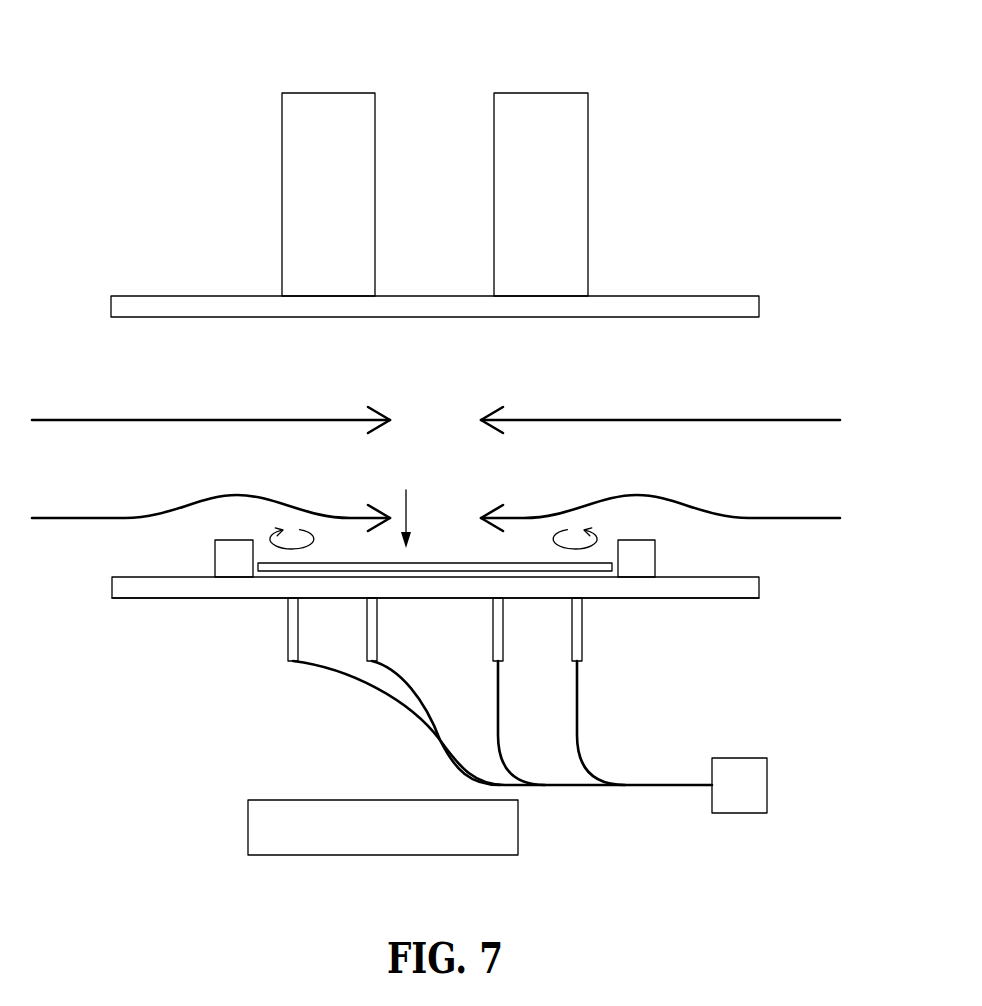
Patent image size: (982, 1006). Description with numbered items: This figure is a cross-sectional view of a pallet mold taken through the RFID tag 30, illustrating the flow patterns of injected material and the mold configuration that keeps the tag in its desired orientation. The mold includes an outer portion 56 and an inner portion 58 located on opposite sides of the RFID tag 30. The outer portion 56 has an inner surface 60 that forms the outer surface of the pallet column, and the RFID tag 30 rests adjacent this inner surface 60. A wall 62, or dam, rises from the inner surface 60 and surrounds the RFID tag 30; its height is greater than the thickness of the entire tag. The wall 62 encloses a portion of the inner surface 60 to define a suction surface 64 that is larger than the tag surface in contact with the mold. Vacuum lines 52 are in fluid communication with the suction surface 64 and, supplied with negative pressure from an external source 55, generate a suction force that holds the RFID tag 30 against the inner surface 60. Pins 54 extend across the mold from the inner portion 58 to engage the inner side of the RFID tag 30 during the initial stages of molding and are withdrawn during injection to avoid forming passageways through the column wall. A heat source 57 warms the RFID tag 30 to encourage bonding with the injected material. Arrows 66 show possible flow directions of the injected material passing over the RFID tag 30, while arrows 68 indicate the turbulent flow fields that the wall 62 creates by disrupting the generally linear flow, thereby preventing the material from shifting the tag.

The pins 54 is at (542, 93).
The inner portion 58 is at (672, 296).
The arrows 66 is at (197, 420).
The RFID tag 30 is at (406, 490).
The suction surface 64 is at (429, 577).
The wall 62 is at (215, 565).
The arrows 68 is at (276, 533).
The inner surface 60 is at (252, 574).
The outer portion 56 is at (718, 598).
The vacuum lines 52 is at (288, 648).
The heat source 57 is at (385, 800).
The external source 55 is at (740, 758).